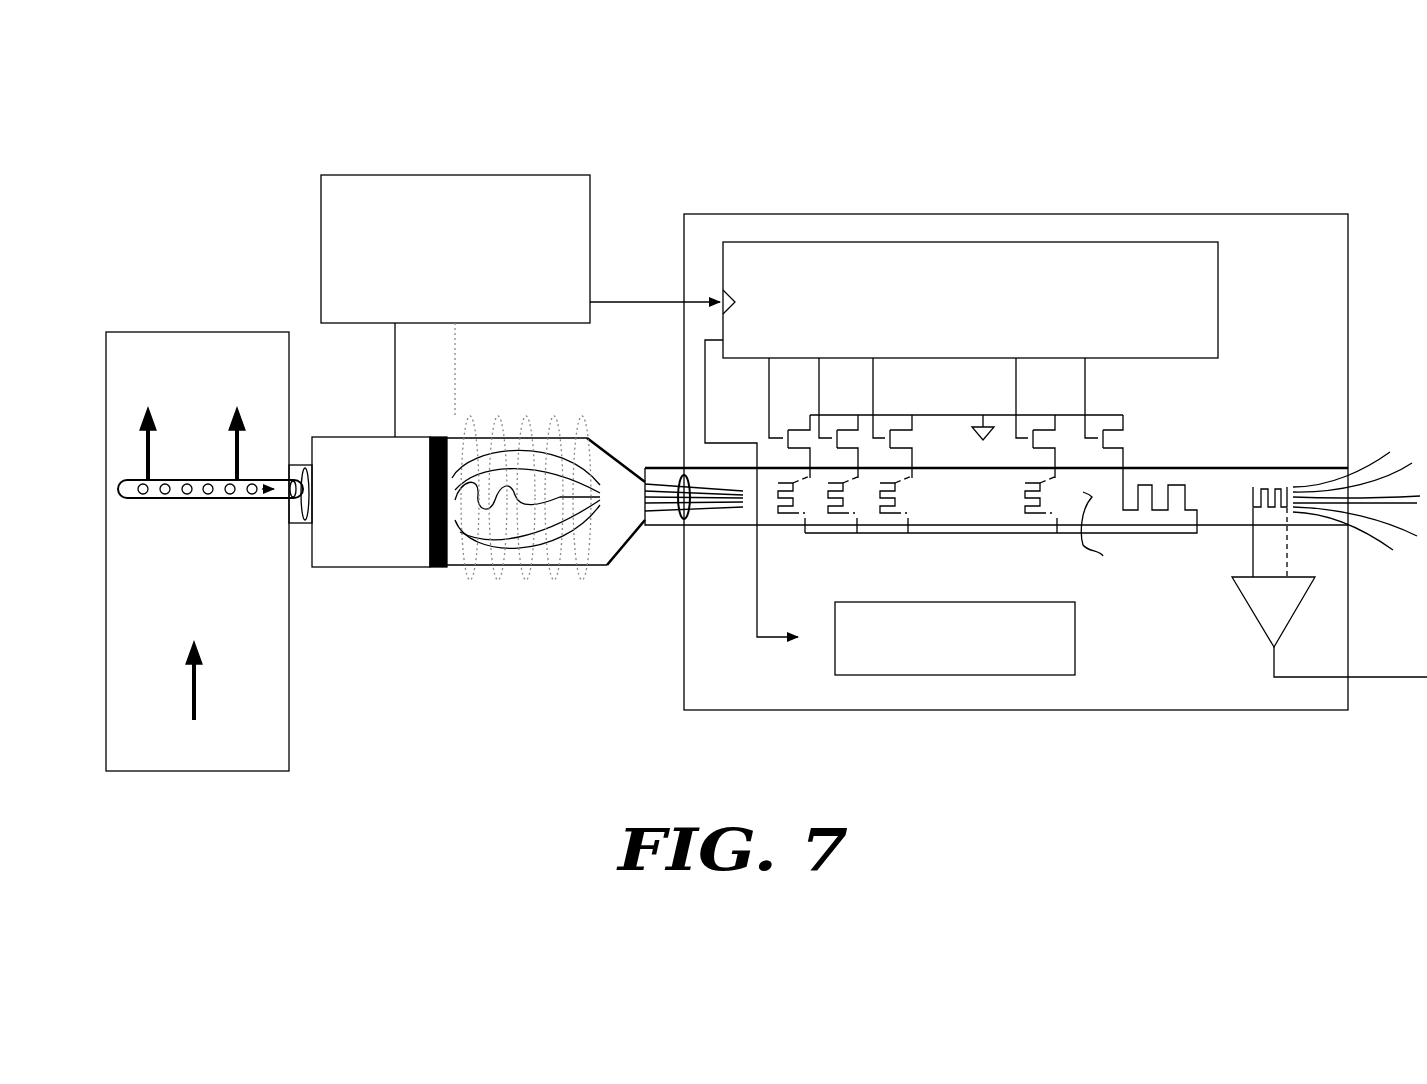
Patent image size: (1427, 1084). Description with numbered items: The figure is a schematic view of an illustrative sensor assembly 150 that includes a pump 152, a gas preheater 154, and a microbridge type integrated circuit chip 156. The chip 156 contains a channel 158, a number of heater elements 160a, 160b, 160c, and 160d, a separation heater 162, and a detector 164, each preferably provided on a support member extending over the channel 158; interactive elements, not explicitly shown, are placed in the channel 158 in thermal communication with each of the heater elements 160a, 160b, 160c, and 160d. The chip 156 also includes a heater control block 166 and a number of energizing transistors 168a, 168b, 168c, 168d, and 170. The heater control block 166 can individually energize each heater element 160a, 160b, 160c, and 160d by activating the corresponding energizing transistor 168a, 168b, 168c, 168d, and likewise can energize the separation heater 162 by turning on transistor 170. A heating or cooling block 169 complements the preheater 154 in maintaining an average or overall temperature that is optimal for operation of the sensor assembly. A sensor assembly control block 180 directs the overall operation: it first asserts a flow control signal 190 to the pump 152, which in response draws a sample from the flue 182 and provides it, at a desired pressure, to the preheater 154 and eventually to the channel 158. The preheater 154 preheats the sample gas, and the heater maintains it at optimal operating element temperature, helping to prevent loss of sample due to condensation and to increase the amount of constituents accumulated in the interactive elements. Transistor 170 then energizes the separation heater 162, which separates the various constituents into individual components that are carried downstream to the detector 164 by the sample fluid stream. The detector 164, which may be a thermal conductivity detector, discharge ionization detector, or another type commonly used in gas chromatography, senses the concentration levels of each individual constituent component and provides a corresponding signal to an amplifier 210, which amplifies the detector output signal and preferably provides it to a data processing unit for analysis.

The sensor assembly 150 is at (350, 100).
The pump 152 is at (375, 568).
The gas preheater 154 is at (587, 565).
The microbridge type integrated circuit chip 156 is at (1158, 712).
The channel 158 is at (996, 526).
The heater element 160a is at (775, 517).
The heater element 160b is at (828, 517).
The heater element 160c is at (883, 517).
The heater element 160d is at (1025, 517).
The separation heater 162 is at (1140, 485).
The detector 164 is at (1266, 487).
The heater control block 166 is at (760, 242).
The energizing transistor 168a is at (778, 427).
The energizing transistor 168b is at (838, 424).
The energizing transistor 168c is at (889, 426).
The energizing transistor 168d is at (1026, 424).
The heating or cooling block 169 is at (893, 675).
The transistor 170 is at (1096, 424).
The sensor assembly control block 180 is at (458, 174).
The flue 182 is at (292, 357).
The flow control signal 190 is at (410, 364).
The amplifier 210 is at (1290, 612).